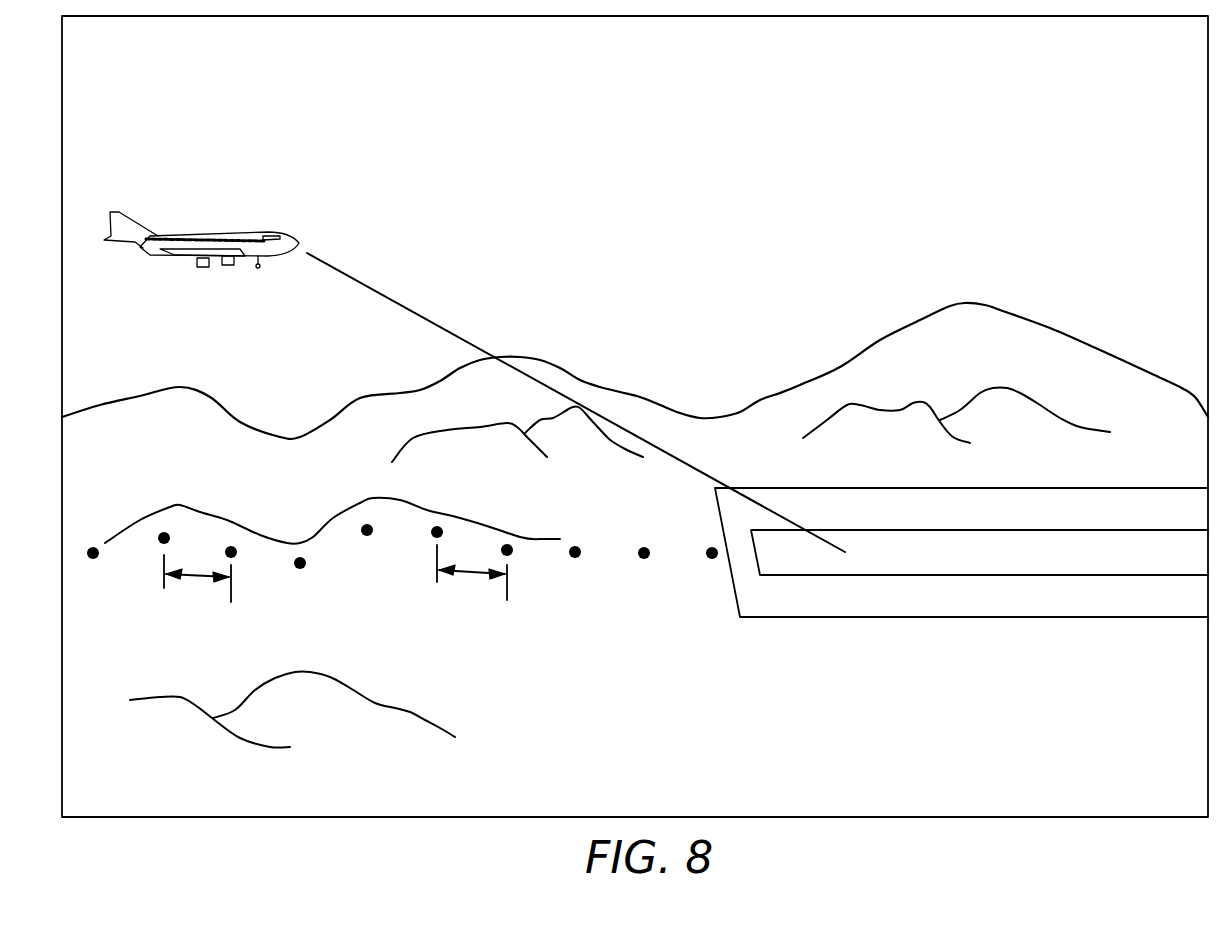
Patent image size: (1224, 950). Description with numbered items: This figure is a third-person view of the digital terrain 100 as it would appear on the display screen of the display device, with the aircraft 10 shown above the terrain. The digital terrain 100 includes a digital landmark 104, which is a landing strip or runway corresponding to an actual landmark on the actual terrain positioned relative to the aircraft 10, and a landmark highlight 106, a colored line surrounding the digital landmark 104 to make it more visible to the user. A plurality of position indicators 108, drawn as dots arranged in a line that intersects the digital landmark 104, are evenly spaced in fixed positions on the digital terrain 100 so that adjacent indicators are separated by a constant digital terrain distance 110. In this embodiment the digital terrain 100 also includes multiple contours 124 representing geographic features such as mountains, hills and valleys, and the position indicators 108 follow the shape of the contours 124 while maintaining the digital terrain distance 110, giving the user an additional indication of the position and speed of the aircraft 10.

The aircraft 10 is at (183, 235).
The digital terrain 100 is at (1166, 414).
The digital landmark 104 is at (983, 575).
The landmark highlight 106 is at (1022, 487).
The position indicators 108 is at (575, 560).
The digital terrain distance 110 is at (199, 577).
The contours 124 is at (427, 438).